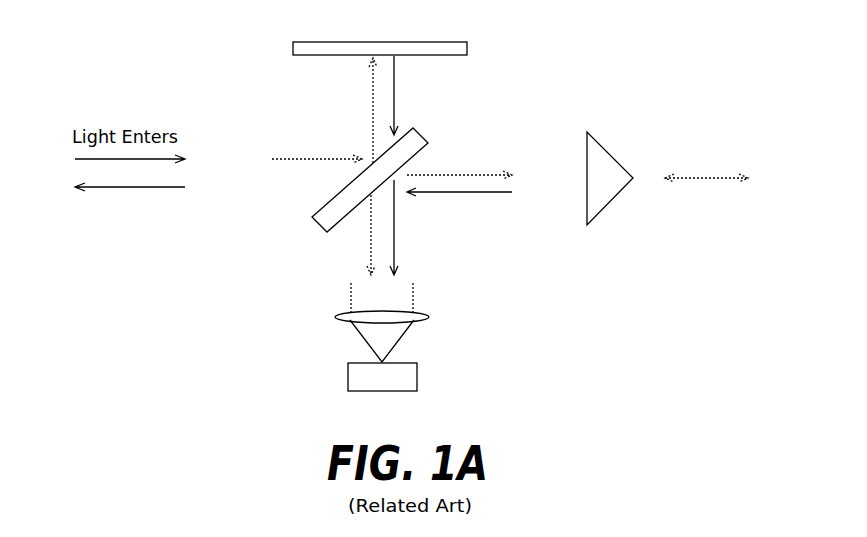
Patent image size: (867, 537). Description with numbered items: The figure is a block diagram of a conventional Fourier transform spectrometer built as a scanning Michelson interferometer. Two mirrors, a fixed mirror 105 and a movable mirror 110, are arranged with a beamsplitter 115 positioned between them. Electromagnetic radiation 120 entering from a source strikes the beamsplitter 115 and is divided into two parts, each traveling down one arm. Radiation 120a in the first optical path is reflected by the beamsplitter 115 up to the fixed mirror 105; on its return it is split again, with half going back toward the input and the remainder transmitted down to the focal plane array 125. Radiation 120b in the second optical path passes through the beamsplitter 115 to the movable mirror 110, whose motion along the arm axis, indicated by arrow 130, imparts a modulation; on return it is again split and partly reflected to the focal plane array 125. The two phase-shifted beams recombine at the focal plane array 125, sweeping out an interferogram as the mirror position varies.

The fixed mirror 105 is at (467, 42).
The movable mirror 110 is at (600, 140).
The beamsplitter 115 is at (416, 131).
The electromagnetic radiation 120 is at (147, 187).
The radiation in first optical path 120a is at (352, 114).
The radiation in second optical path 120b is at (443, 198).
The focal plane array 125 is at (417, 364).
The arrow indicating mirror motion 130 is at (720, 178).